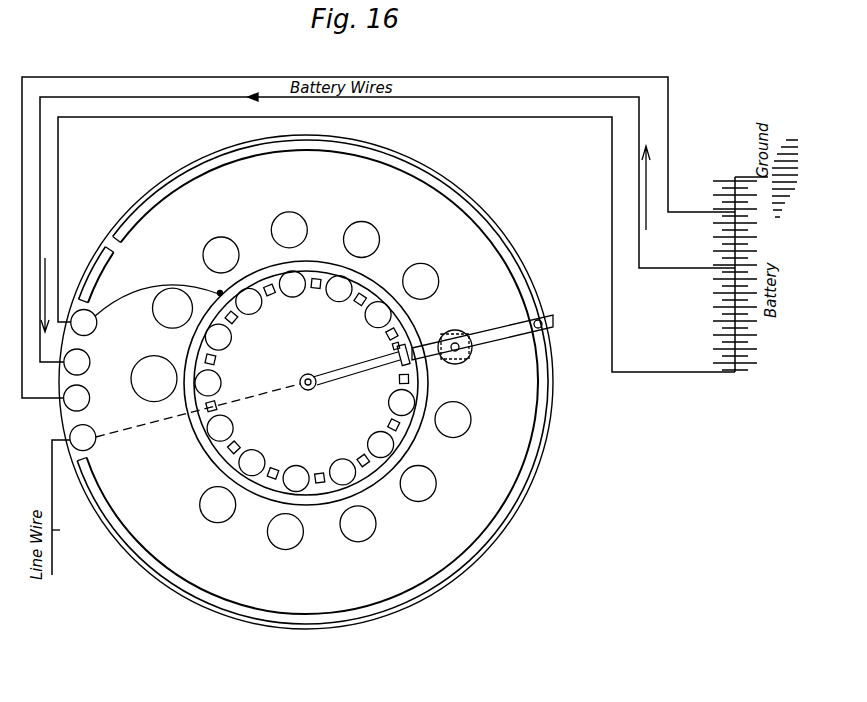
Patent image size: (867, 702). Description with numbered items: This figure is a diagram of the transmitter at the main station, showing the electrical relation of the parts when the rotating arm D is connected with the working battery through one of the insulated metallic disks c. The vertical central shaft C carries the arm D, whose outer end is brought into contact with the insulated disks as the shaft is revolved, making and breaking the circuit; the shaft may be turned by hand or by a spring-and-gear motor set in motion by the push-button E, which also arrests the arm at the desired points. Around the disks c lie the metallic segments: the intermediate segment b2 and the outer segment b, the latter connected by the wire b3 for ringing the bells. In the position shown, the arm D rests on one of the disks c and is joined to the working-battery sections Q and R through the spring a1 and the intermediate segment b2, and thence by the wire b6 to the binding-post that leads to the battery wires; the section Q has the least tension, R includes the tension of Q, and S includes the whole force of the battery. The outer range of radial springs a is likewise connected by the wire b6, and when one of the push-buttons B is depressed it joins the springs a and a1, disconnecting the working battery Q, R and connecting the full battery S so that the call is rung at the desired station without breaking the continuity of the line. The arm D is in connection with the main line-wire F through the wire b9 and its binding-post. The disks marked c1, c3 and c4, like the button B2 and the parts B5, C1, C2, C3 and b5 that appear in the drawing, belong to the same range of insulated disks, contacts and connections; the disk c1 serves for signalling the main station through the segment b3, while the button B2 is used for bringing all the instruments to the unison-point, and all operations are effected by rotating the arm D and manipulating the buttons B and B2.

The push-button B is at (335, 381).
The button B2 is at (173, 308).
The electromagnet on arm B5 is at (455, 337).
The vertical central shaft C is at (83, 438).
The contact on ring C1 is at (77, 398).
The contact on ring C2 is at (77, 362).
The contact on ring C3 is at (84, 323).
The insulated metallic disk c is at (325, 381).
The metallic insulated disk c1 is at (208, 383).
The inner contact c3 is at (220, 428).
The inner contact c4 is at (252, 463).
The rotating arm D is at (345, 368).
The push-button E is at (154, 379).
The radial spring a is at (482, 337).
The spring a1 is at (445, 363).
The outer segment b is at (312, 382).
The intermediate segment b2 is at (306, 378).
The metallic segment b3 is at (401, 347).
The connection b5 is at (205, 337).
The wire b6 is at (159, 300).
The wire b9 is at (198, 410).
The battery-section Q is at (727, 274).
The battery-section R is at (702, 241).
The battery-section S is at (702, 316).
The line-wire F is at (59, 523).